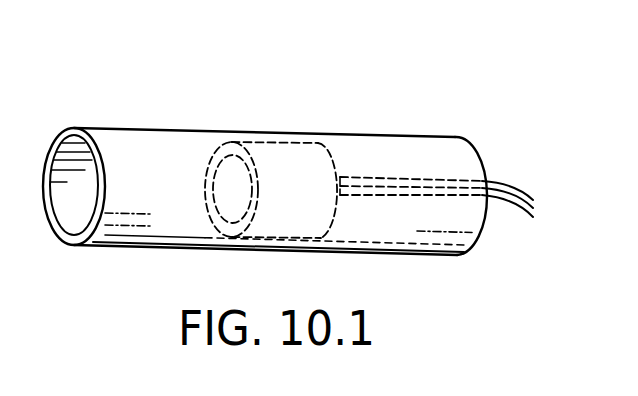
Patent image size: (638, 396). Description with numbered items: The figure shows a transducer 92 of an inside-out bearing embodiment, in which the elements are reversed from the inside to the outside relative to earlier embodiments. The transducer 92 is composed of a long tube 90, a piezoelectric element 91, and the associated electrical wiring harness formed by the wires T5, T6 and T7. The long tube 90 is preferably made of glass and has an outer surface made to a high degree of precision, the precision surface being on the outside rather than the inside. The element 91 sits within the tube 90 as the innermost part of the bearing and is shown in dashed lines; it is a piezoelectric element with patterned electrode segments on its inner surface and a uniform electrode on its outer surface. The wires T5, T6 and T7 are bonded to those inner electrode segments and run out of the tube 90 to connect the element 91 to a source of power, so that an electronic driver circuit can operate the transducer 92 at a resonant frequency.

The long tube 90 is at (133, 130).
The piezoelectric element 91 is at (292, 147).
The transducer 92 is at (102, 108).
The wire T5 is at (497, 180).
The wire T6 is at (523, 195).
The wire T7 is at (507, 203).